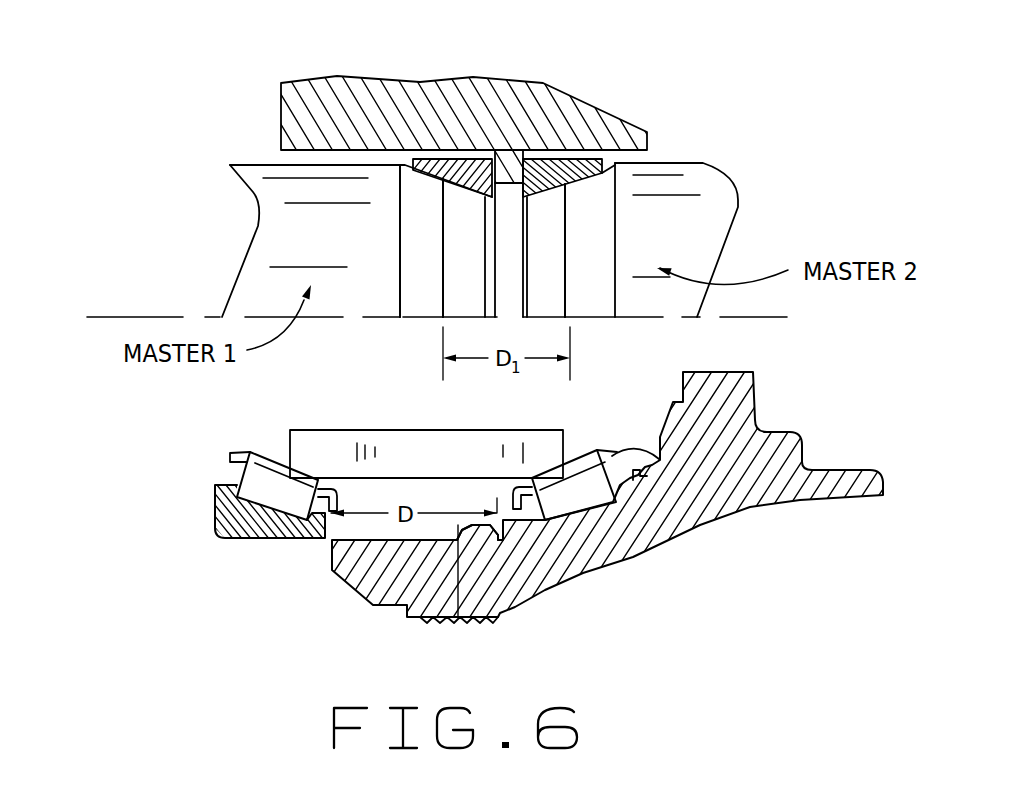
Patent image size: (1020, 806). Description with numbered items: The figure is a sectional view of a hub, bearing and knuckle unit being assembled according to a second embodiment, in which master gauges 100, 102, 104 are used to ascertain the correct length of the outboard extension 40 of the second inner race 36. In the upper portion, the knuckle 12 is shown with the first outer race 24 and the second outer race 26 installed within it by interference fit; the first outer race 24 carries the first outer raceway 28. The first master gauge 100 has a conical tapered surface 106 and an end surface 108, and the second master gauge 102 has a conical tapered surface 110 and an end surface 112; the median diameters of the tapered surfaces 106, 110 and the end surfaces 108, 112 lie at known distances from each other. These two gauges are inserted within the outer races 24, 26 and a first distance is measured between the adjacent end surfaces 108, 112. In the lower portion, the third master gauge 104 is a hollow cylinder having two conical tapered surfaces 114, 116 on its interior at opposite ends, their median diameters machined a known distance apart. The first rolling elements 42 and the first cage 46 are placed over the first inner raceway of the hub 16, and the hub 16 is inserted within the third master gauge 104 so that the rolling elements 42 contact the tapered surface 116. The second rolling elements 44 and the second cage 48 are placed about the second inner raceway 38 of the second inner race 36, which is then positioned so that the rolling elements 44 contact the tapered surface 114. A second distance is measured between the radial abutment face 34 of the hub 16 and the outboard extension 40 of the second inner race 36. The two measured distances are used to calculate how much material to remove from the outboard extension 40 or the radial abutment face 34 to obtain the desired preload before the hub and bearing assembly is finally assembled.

The knuckle 12 is at (281, 97).
The second outer race 26 is at (443, 197).
The first outer race 24 is at (527, 185).
The first master gauge 100 is at (257, 163).
The conical tapered surface 106 is at (417, 212).
The end surface 108 is at (447, 254).
The end surface 112 is at (562, 250).
The conical tapered surface 110 is at (593, 217).
The second master gauge 102 is at (678, 162).
The third master gauge 104 is at (297, 430).
The conical tapered surface 116 is at (552, 430).
The conical tapered surface 114 is at (303, 477).
The second plurality of rolling elements 44 is at (287, 487).
The second inner raceway 38 is at (270, 500).
The second cage 48 is at (233, 452).
The second inner race 36 is at (215, 505).
The hub 16 is at (753, 390).
The outboard extension 40 is at (353, 527).
The radial abutment face 34 is at (458, 617).
The first outer raceway 28 is at (568, 500).
The first plurality of rolling elements 42 is at (577, 485).
The first cage 46 is at (600, 497).